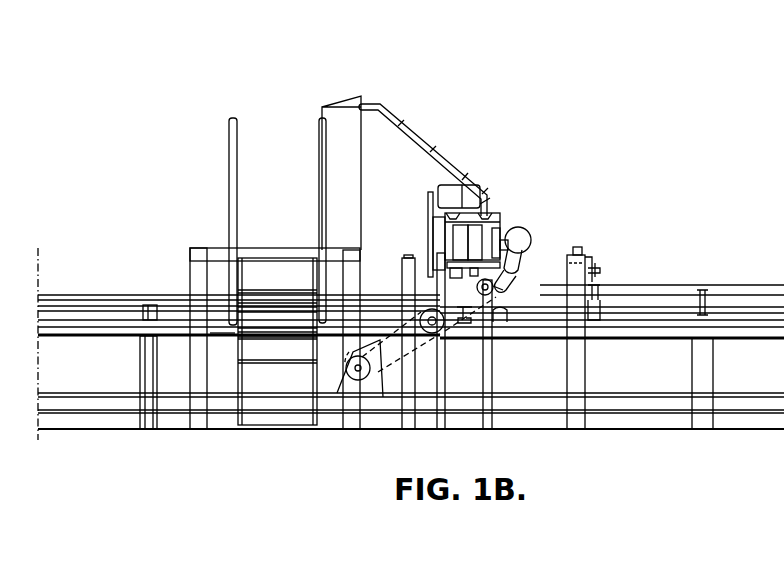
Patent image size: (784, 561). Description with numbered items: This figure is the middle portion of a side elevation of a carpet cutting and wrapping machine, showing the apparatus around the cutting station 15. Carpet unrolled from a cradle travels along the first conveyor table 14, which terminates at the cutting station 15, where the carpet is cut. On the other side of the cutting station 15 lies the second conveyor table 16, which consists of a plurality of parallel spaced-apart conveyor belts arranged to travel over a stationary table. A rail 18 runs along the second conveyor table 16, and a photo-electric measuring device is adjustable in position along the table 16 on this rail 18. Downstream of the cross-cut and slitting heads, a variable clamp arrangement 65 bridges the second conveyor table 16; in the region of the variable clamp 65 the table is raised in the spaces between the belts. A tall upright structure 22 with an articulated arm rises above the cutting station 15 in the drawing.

The first conveyor table 14 is at (100, 295).
The cutting station 15 is at (502, 207).
The second conveyor table 16 is at (547, 302).
The rail 18 is at (763, 290).
The vertical plate / arm support 22 is at (337, 100).
The variable clamp arrangement 65 is at (596, 258).